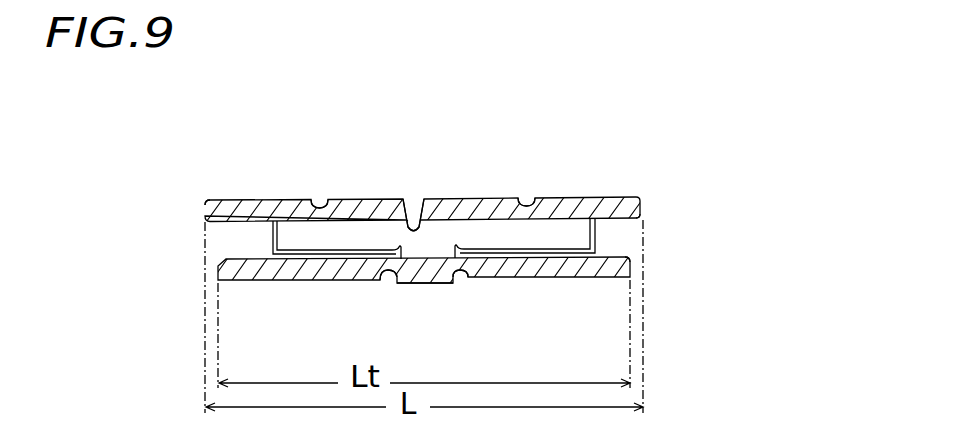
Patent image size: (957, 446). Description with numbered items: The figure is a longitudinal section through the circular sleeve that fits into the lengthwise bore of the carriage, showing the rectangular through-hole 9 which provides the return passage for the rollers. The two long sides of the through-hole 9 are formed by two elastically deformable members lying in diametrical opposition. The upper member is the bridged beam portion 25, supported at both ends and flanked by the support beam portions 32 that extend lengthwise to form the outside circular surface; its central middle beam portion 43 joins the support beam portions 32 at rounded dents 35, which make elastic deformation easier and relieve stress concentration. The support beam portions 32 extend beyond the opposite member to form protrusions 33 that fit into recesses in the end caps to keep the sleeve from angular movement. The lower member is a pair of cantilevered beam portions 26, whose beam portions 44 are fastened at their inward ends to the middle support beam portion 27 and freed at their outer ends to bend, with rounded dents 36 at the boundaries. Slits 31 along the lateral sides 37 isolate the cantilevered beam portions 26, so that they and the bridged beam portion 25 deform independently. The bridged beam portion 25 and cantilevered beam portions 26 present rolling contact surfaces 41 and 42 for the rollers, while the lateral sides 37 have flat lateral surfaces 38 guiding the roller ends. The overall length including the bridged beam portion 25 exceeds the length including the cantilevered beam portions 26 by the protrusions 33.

The through-hole 9 is at (257, 243).
The bridged beam portion 25 is at (421, 203).
The cantilevered beam portions 26 is at (297, 272).
The middle support beam portion 27 is at (423, 270).
The slits 31 is at (320, 274).
The support beam portions 32 is at (250, 204).
The protrusions 33 is at (207, 206).
The rounded dents 35 is at (321, 206).
The rounded dents 36 is at (387, 279).
The lateral sides 37 is at (461, 235).
The flat lateral surfaces 38 is at (348, 240).
The rolling contact surface 41 is at (403, 203).
The rolling contact surface 42 is at (492, 258).
The middle beam portion 43 is at (442, 204).
The beam portions 44 is at (606, 268).